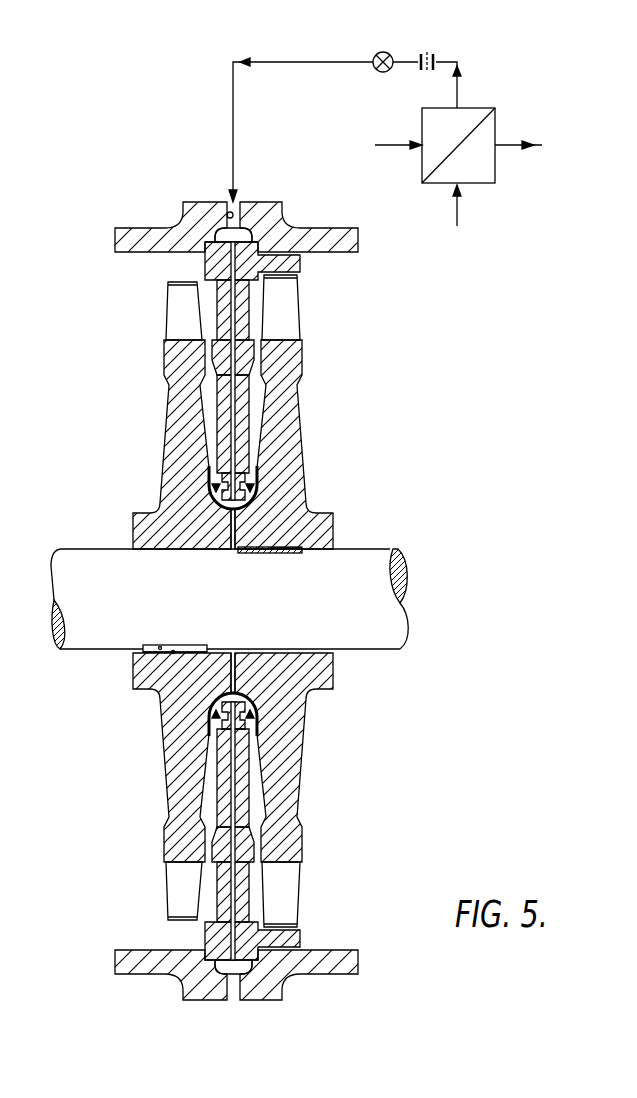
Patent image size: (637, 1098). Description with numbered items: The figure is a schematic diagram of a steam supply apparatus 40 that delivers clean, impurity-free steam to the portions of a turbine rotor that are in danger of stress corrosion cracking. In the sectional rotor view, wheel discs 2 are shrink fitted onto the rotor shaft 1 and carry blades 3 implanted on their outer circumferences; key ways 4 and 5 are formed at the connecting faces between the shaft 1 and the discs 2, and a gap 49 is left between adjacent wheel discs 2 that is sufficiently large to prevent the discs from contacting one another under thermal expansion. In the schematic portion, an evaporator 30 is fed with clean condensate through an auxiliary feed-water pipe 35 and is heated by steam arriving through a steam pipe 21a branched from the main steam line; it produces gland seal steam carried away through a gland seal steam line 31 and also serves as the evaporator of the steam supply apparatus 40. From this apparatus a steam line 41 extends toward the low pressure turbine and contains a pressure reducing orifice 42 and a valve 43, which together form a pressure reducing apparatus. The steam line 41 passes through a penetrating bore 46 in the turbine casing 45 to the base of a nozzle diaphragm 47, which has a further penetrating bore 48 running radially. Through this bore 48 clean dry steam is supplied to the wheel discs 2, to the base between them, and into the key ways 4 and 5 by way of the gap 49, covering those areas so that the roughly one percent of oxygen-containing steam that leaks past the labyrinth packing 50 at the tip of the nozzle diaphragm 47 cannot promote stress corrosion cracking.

The rotor shaft 1 is at (355, 562).
The wheel discs 2 is at (175, 450).
The blades 3 is at (175, 313).
The key way 4 is at (267, 555).
The key way 5 is at (285, 555).
The steam pipe 21a is at (393, 143).
The evaporator 30 is at (497, 112).
The gland seal steam line 31 is at (532, 143).
The auxiliary feed-water pipe 35 is at (462, 212).
The steam supply apparatus 40 is at (489, 62).
The steam line 41 is at (307, 68).
The pressure reducing orifice 42 is at (437, 52).
The valve 43 is at (381, 52).
The turbine casing 45 is at (340, 232).
The penetrating bore 46 is at (228, 212).
The nozzle diaphragm 47 is at (215, 348).
The penetrating bore 48 is at (232, 422).
The gap 49 is at (223, 538).
The labyrinth packing 50 is at (223, 498).